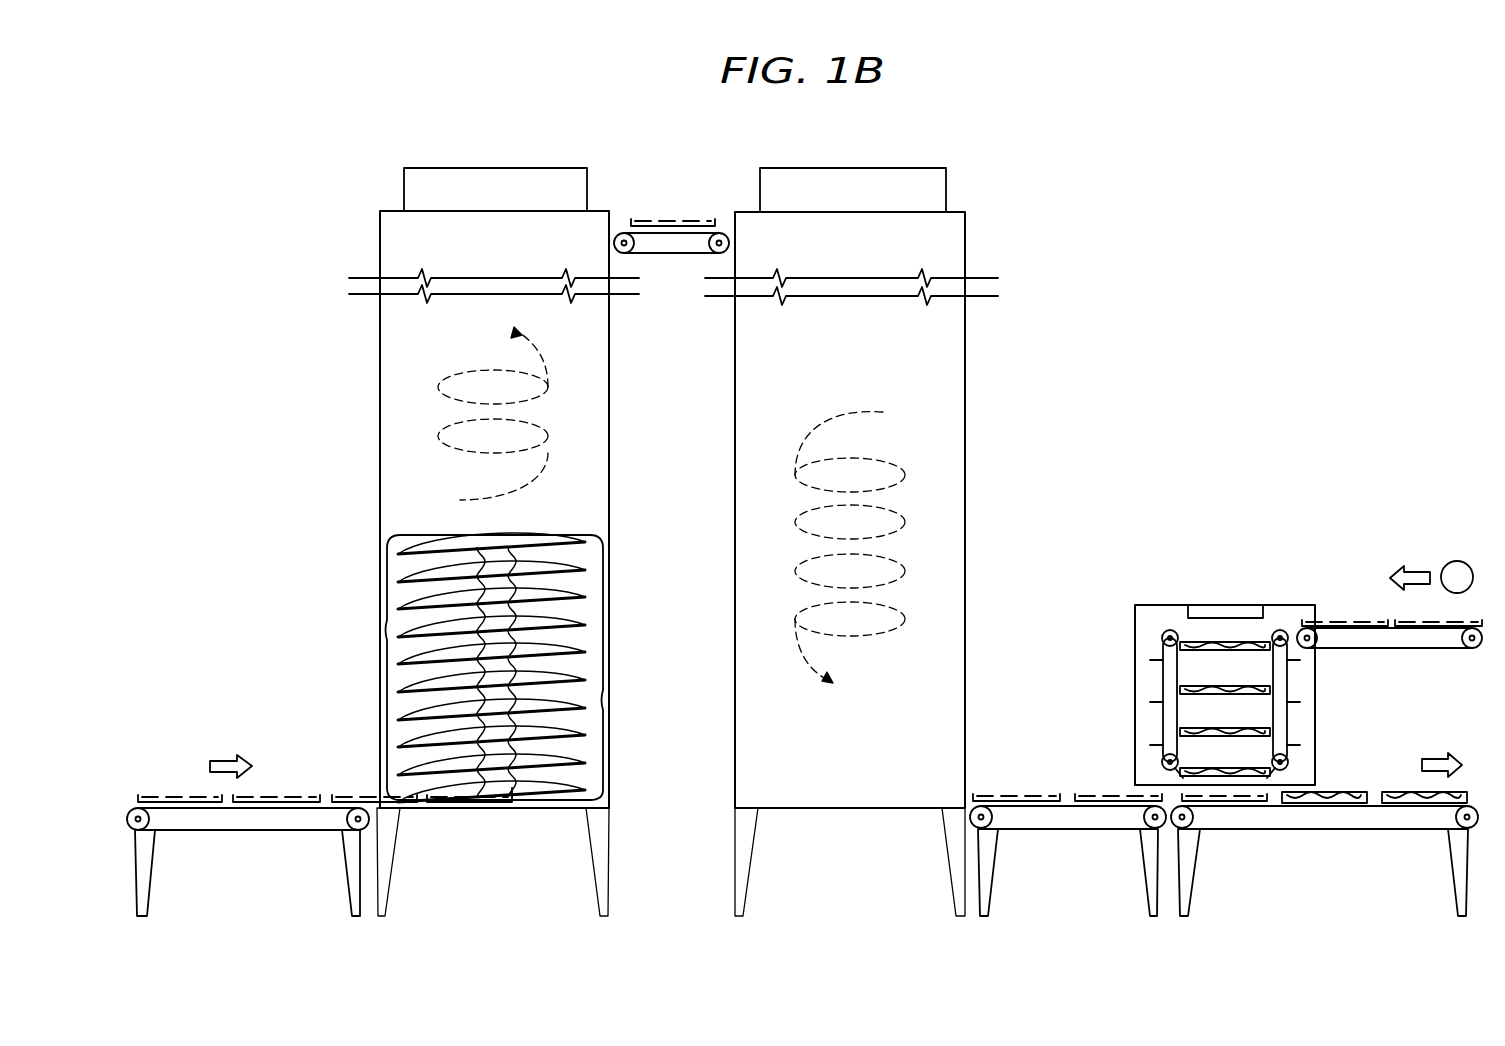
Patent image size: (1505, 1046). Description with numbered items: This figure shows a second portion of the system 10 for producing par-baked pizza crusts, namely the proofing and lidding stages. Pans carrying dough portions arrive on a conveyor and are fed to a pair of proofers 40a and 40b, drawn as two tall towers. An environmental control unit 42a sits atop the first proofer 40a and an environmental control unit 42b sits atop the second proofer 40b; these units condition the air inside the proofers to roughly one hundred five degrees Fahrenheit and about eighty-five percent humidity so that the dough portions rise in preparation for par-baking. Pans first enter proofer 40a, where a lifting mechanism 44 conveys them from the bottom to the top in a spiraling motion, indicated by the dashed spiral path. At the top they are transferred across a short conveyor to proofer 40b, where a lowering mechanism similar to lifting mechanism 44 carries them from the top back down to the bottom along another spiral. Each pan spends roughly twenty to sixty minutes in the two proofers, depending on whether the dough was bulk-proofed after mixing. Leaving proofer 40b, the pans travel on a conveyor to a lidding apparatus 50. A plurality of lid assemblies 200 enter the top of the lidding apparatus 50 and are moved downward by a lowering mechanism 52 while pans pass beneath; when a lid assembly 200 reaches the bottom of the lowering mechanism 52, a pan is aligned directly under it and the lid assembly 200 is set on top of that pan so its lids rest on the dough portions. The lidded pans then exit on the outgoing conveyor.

The system 10 is at (700, 152).
The proofer 40a is at (379, 462).
The proofer 40b is at (965, 560).
The environmental control unit 42a is at (521, 168).
The environmental control unit 42b is at (826, 168).
The lifting mechanism 44 is at (580, 628).
The lidding apparatus 50 is at (1135, 695).
The lowering mechanism 52 is at (1283, 722).
The lid assembly 200 is at (1222, 640).